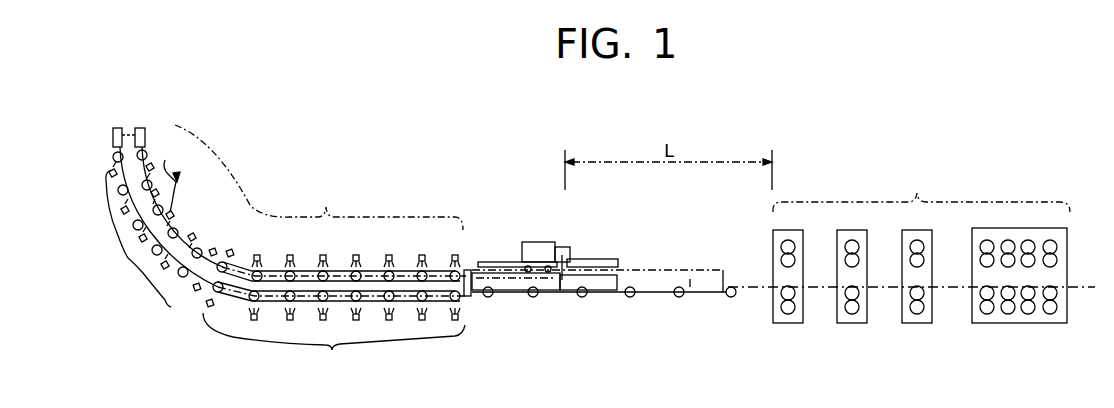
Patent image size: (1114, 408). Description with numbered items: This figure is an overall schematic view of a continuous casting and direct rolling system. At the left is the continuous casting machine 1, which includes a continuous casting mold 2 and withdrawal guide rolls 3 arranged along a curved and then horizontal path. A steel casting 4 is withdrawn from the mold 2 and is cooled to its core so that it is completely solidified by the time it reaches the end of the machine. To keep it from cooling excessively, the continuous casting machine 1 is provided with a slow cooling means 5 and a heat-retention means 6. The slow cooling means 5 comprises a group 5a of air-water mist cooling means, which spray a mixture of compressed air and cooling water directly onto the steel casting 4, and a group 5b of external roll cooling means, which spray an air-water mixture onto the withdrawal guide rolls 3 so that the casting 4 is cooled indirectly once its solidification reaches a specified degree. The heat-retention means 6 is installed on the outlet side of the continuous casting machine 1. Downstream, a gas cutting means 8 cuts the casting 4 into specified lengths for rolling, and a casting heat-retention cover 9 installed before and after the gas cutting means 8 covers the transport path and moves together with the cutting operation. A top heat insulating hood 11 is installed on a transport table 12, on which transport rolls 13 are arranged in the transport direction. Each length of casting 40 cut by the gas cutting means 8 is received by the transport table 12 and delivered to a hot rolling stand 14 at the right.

The continuous casting machine 1 is at (326, 185).
The continuous casting mold 2 is at (113, 136).
The withdrawal guide rolls 3 is at (183, 278).
The steel casting 4 is at (168, 172).
The slow cooling means 5 is at (230, 243).
The group of air-water mist cooling means 5a is at (135, 238).
The group of external roll cooling means 5b is at (334, 347).
The heat-retention means 6 is at (270, 302).
The gas cutting means 8 is at (540, 243).
The casting heat-retention cover 9 is at (592, 259).
The top heat insulating hood 11 is at (500, 264).
The transport table 12 is at (700, 300).
The transport rolls 13 is at (731, 298).
The hot rolling stand 14 is at (911, 246).
The length of casting 40 is at (598, 284).